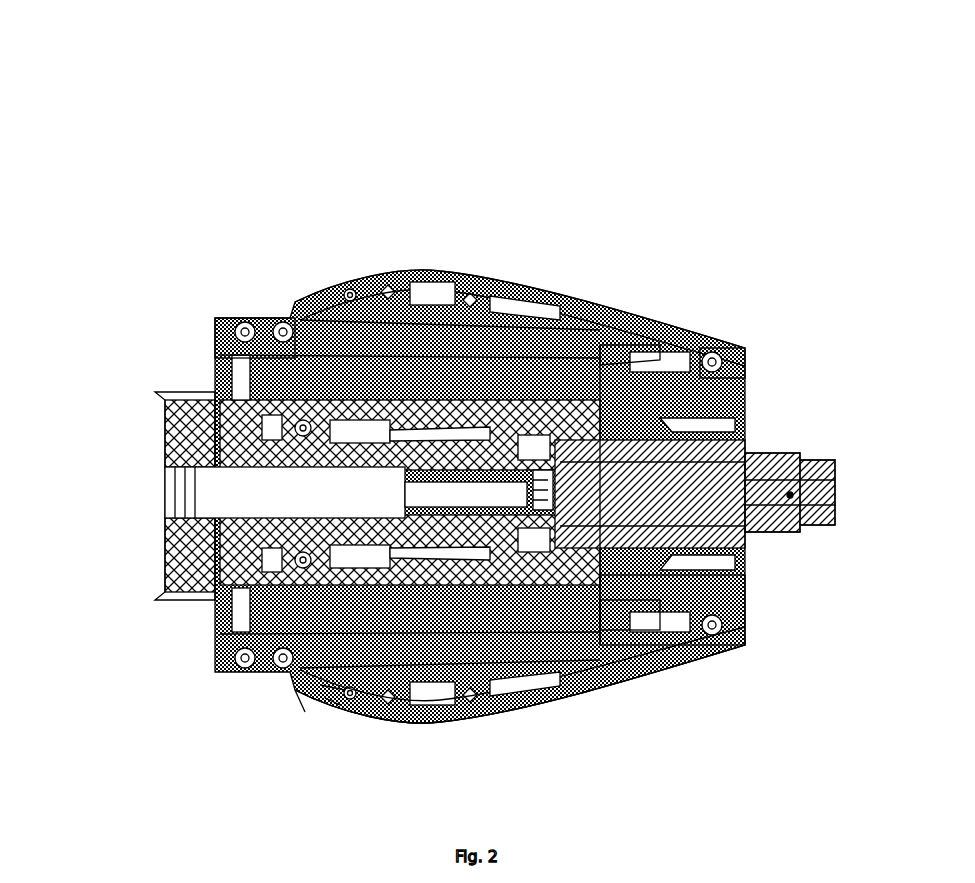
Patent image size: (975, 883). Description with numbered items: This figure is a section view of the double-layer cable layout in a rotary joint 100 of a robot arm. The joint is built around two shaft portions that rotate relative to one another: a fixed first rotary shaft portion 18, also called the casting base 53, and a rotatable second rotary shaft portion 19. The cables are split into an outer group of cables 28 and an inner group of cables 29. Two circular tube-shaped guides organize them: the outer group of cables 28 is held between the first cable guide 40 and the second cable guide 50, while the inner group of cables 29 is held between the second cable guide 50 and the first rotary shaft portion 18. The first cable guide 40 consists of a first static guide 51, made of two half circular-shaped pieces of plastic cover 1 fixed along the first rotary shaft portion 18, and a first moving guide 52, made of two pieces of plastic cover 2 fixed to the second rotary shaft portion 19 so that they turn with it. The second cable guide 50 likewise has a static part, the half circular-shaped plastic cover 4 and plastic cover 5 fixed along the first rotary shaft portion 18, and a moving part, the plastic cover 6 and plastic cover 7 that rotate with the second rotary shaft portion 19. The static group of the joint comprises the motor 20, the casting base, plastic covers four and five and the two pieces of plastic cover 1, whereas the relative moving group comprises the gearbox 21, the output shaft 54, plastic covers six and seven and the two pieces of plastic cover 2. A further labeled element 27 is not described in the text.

The joint 100 is at (815, 72).
The plastic cover 1 is at (605, 310).
The plastic cover 2 is at (382, 285).
The half circular-shaped plastic cover 4 is at (428, 300).
The half circular-shaped plastic cover 5 is at (330, 700).
The plastic cover 6 is at (296, 305).
The half circular-shaped plastic cover 7 is at (300, 700).
The first rotary shaft portion 18 is at (483, 300).
The second rotary shaft portion 19 is at (190, 435).
The motor 20 is at (818, 452).
The gearbox 21 is at (750, 625).
The recess 27 is at (680, 340).
The outer group of cables 28 is at (285, 695).
The inner group of cables 29 is at (558, 318).
The first cable guide 40 is at (333, 688).
The second cable guide 50 is at (215, 663).
The first static guide 51 is at (645, 330).
The first moving guide 52 is at (225, 315).
The casting base 53 is at (752, 345).
The output shaft 54 is at (237, 495).